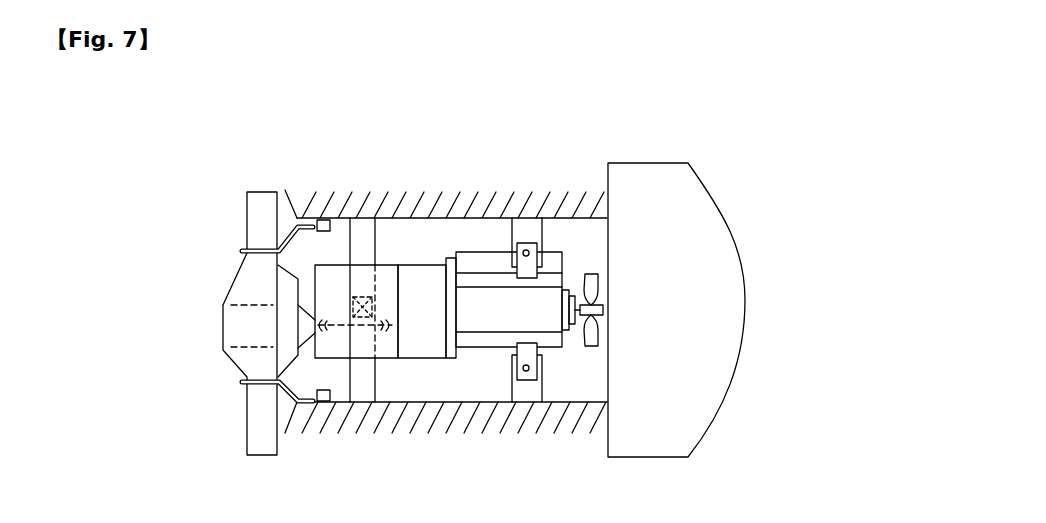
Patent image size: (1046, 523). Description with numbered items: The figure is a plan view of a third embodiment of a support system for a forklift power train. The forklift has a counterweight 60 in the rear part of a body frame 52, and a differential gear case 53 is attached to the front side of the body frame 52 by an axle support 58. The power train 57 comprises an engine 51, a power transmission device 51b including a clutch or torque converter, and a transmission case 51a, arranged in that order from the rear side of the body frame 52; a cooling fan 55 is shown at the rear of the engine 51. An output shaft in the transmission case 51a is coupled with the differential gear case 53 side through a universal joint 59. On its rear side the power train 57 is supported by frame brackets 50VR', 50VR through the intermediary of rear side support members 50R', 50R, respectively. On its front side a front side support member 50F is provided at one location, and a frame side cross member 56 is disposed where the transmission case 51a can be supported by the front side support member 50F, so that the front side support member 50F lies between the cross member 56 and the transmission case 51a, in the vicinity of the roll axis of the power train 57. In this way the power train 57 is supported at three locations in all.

The front side support member 50F is at (358, 325).
The rear side support member (right) 50R is at (598, 257).
The rear side support member (left) 50R' is at (601, 361).
The frame bracket (right) 50VR is at (529, 188).
The frame bracket (left) 50VR' is at (544, 431).
The engine 51 is at (485, 303).
The transmission case 51a is at (390, 352).
The power transmission device 51b is at (413, 277).
The body frame 52 is at (552, 204).
The differential gear case 53 is at (268, 332).
The cooling fan 55 is at (600, 285).
The cross member 56 is at (372, 250).
The power train 57 is at (474, 364).
The axle support 58 is at (297, 247).
The universal joint 59 is at (333, 323).
The counterweight 60 is at (695, 210).